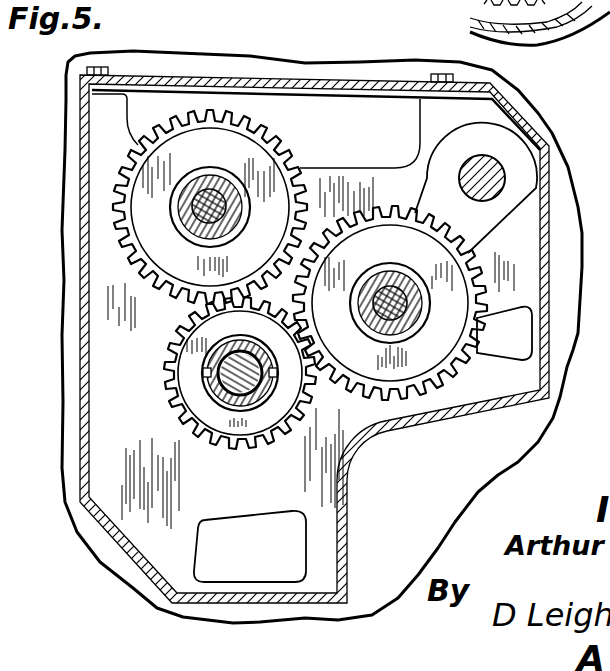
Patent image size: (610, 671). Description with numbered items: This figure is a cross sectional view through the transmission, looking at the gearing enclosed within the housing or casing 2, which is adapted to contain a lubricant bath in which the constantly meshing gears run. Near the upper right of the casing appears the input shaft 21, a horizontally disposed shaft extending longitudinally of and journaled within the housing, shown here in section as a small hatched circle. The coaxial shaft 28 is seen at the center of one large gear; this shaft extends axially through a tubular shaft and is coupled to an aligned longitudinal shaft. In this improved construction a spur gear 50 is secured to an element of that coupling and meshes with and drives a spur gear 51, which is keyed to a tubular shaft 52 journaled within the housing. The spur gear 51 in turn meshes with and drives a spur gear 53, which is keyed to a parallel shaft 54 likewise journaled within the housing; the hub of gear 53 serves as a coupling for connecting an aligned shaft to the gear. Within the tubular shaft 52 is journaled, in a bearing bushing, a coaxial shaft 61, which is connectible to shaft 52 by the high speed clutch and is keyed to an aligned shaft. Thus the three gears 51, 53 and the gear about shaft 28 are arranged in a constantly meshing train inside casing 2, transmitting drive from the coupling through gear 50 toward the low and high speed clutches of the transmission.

The housing or casing 2 is at (546, 277).
The input shaft 21 is at (485, 157).
The coaxial shaft 28 is at (388, 290).
The spur gear 50 is at (465, 247).
The spur gear 51 is at (224, 391).
The tubular shaft 52 is at (222, 352).
The spur gear 53 is at (214, 204).
The parallel shaft 54 is at (212, 210).
The coaxial shaft 61 is at (240, 373).